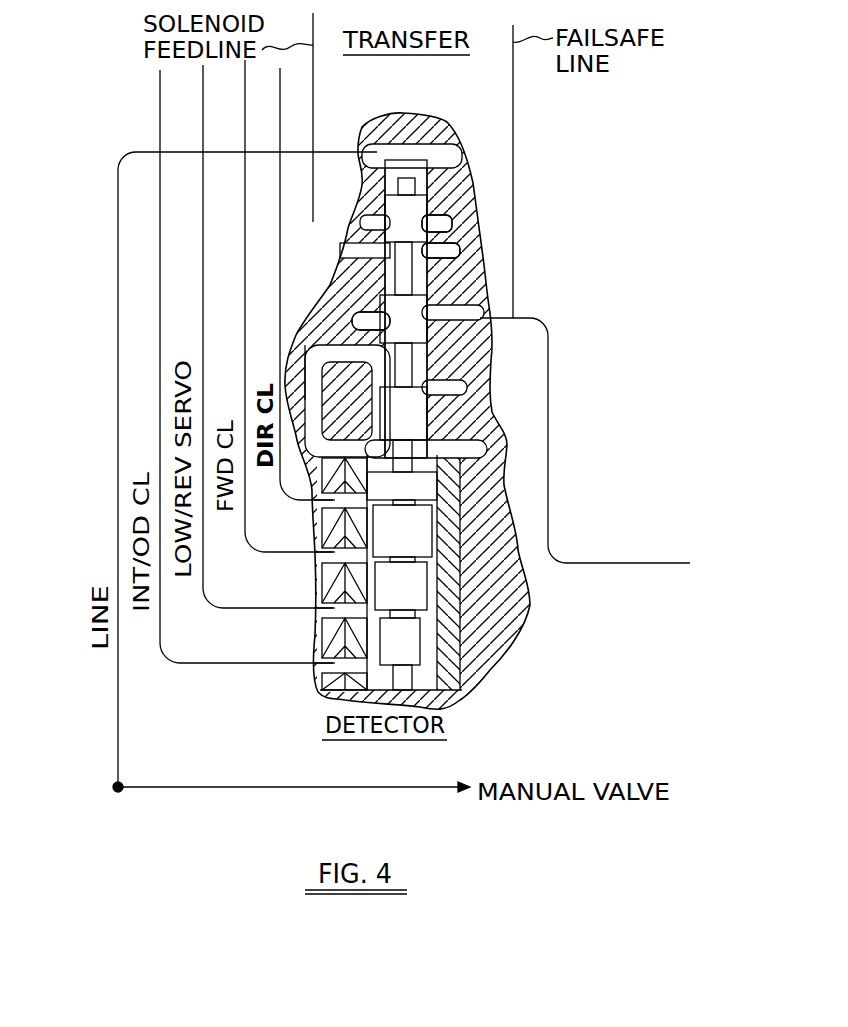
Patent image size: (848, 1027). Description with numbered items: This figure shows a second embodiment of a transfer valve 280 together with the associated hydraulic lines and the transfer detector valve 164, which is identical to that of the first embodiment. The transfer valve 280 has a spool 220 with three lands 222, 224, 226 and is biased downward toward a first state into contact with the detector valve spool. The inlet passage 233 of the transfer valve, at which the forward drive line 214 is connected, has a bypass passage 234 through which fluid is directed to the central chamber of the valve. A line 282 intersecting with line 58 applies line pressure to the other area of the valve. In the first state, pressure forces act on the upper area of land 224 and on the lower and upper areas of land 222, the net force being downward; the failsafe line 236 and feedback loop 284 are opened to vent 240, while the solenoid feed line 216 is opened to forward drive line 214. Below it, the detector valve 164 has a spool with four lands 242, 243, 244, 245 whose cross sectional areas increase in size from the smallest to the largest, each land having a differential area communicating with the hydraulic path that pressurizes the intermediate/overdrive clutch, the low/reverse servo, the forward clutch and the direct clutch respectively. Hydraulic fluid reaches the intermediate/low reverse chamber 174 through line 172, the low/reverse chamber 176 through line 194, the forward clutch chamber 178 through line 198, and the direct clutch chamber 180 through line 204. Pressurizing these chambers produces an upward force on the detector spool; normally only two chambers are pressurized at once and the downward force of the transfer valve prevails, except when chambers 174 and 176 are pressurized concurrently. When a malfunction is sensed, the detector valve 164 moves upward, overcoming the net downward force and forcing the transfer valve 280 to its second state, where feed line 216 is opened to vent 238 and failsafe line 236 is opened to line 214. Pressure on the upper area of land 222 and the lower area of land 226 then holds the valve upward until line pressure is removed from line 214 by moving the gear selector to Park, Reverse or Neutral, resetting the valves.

The line 58 is at (145, 785).
The transfer detector valve 164 is at (469, 556).
The line 172 is at (160, 345).
The intermediate/low reverse chamber 174 is at (320, 688).
The low/reverse chamber 176 is at (318, 637).
The forward clutch chamber 178 is at (318, 575).
The direct clutch chamber 180 is at (335, 508).
The line 194 is at (203, 325).
The line 198 is at (248, 299).
The line 204 is at (280, 270).
The forward drive line 214 is at (548, 447).
The solenoid feed line 216 is at (313, 98).
The spool 220 is at (357, 312).
The land 222 is at (424, 231).
The land 224 is at (422, 332).
The land 226 is at (422, 425).
The inlet passage 233 is at (476, 316).
The bypass passage 234 is at (490, 268).
The failsafe line 236 is at (513, 118).
The vent 238 is at (450, 222).
The vent 240 is at (357, 390).
The land 242 is at (418, 653).
The land 243 is at (419, 598).
The land 244 is at (420, 543).
The land 245 is at (420, 497).
The transfer valve 280 is at (336, 235).
The line 282 is at (117, 355).
The feedback loop 284 is at (290, 375).